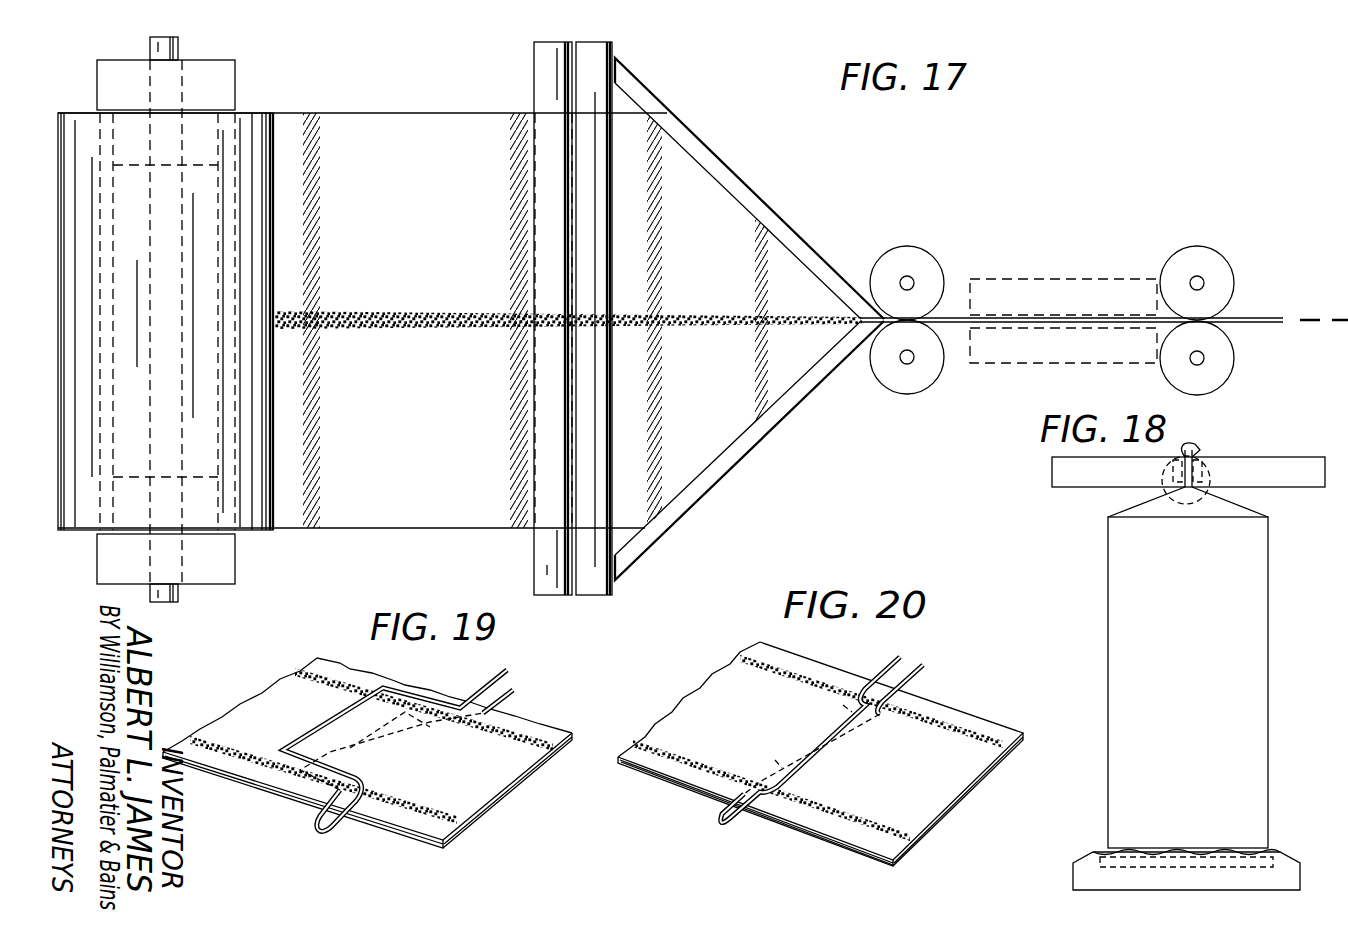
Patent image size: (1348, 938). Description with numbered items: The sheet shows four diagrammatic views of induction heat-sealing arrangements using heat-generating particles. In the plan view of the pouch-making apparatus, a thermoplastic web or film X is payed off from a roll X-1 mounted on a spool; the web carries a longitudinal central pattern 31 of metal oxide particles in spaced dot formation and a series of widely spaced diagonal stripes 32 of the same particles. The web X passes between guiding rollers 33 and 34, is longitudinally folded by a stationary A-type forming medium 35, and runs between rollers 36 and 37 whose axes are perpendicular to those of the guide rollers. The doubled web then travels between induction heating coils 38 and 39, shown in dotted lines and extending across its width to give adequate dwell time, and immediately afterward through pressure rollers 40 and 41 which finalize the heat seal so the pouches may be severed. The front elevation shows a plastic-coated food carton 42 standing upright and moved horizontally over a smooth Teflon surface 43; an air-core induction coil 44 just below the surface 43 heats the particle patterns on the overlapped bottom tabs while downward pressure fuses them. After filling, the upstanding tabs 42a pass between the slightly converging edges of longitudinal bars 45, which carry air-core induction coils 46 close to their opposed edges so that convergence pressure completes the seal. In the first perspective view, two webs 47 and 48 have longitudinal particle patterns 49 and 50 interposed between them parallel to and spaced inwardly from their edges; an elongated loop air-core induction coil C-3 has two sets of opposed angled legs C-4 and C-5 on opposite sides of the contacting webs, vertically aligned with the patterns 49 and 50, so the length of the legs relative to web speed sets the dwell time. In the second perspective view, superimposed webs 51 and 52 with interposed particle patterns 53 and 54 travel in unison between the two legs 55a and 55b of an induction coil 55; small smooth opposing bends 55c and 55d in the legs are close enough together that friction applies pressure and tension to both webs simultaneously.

In FIG. 17, the roll X-1 is at (245, 128).
In FIG. 17, the web or film X is at (402, 184).
In FIG. 17, the pattern 31 is at (416, 317).
In FIG. 17, the stripes 32 is at (513, 405).
In FIG. 17, the guiding roller 33 is at (545, 76).
In FIG. 17, the guiding roller 34 is at (600, 53).
In FIG. 17, the stationary forming medium 35 is at (713, 170).
In FIG. 17, the roller 36 is at (908, 258).
In FIG. 17, the roller 37 is at (898, 383).
In FIG. 17, the induction heating coil 38 is at (1074, 305).
In FIG. 17, the induction heating coil 39 is at (1074, 355).
In FIG. 17, the pressure roller 40 is at (1213, 267).
In FIG. 17, the pressure roller 41 is at (1227, 357).
In FIG. 18, the carton 42 is at (1196, 659).
In FIG. 18, the upstanding tabs 42a is at (1195, 446).
In FIG. 18, the horizontal surface 43 is at (1280, 852).
In FIG. 18, the induction coil 44 is at (1082, 877).
In FIG. 18, the longitudinal bars 45 is at (1108, 482).
In FIG. 18, the induction coils 46 is at (1186, 488).
In FIG. 19, the web or sheet 47 is at (350, 680).
In FIG. 19, the web or sheet 48 is at (503, 793).
In FIG. 19, the pattern 49 is at (503, 730).
In FIG. 19, the pattern 50 is at (420, 813).
In FIG. 19, the air-core induction coil C-3 is at (510, 672).
In FIG. 19, the angled legs C-4 is at (413, 727).
In FIG. 19, the angled legs C-5 is at (372, 762).
In FIG. 20, the web or sheet 51 is at (663, 767).
In FIG. 20, the web or sheet 52 is at (700, 788).
In FIG. 20, the pattern 53 is at (757, 667).
In FIG. 20, the pattern 54 is at (660, 747).
In FIG. 20, the induction coil 55 is at (913, 659).
In FIG. 20, the leg 55a is at (830, 750).
In FIG. 20, the leg 55b is at (812, 732).
In FIG. 20, the bend 55c is at (867, 723).
In FIG. 20, the bend 55d is at (848, 708).